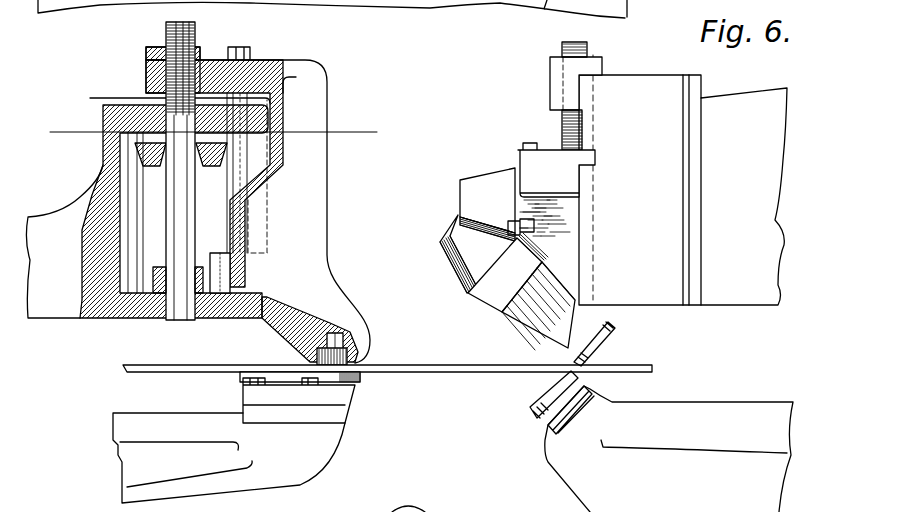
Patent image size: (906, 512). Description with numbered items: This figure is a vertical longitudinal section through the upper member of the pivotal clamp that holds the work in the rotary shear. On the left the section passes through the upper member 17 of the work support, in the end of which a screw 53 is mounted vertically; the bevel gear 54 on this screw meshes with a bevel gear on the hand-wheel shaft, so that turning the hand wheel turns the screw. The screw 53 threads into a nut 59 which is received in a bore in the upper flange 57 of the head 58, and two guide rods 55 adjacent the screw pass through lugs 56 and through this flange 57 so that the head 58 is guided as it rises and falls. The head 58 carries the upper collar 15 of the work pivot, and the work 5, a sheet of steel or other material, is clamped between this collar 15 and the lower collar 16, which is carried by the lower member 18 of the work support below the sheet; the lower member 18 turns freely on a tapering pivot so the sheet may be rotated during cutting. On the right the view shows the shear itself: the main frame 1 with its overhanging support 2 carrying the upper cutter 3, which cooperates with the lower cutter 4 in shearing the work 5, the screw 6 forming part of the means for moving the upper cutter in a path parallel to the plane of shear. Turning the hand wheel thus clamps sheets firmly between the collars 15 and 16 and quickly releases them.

The main frame 1 is at (669, 449).
The overhanging support 2 is at (683, 180).
The upper cutter 3 is at (612, 332).
The lower cutter 4 is at (535, 418).
The work 5 is at (438, 370).
The screw 6 is at (561, 125).
The upper collar 15 is at (353, 363).
The lower collar 16 is at (358, 377).
The upper member 17 is at (148, 208).
The lower member 18 is at (234, 440).
The screw 53 is at (197, 32).
The bevel gear 54 is at (181, 168).
The guide rods 55 is at (240, 168).
The lugs 56 is at (223, 272).
The upper flange 57 is at (147, 82).
The head 58 is at (297, 222).
The nut 59 is at (146, 53).